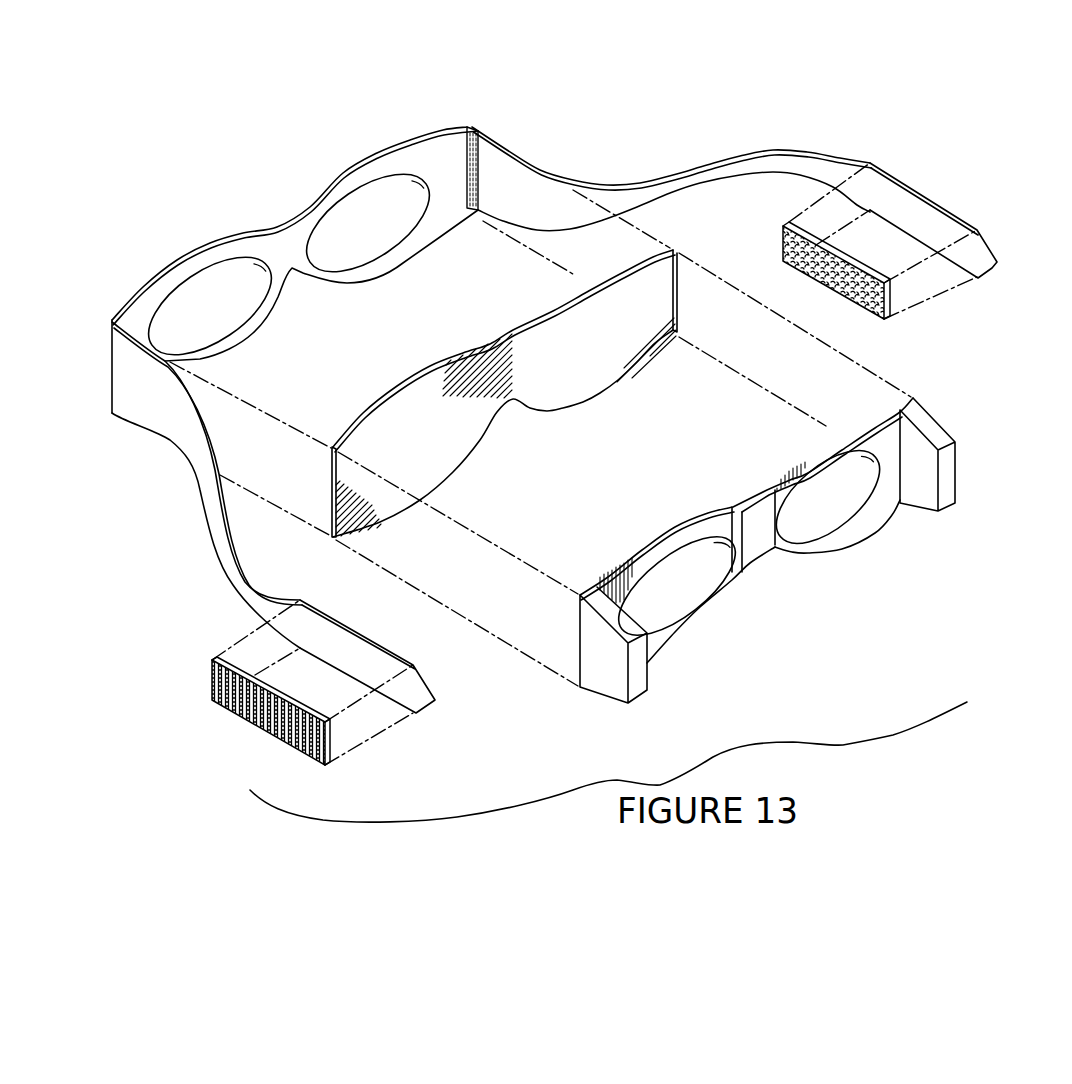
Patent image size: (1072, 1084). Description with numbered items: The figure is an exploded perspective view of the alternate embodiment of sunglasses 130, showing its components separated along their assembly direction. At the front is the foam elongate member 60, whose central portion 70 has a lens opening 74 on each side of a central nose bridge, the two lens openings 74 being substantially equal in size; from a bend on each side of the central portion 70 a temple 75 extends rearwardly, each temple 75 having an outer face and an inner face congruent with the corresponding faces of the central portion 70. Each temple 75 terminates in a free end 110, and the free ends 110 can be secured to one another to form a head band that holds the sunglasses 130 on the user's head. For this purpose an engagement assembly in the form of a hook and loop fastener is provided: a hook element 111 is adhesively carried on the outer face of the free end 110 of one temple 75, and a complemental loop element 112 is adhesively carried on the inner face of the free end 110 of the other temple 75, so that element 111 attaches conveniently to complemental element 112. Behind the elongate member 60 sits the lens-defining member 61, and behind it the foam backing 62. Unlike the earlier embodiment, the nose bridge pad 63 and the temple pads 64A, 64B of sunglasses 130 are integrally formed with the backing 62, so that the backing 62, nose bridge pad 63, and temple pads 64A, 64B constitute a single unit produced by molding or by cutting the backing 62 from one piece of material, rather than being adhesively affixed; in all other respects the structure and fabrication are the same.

The elongate member 60 is at (492, 370).
The central portion 70 is at (295, 235).
The lens opening 74 is at (222, 310).
The temple 75 is at (677, 172).
The free end 110 is at (936, 208).
The element of hook and loop fastener 111 is at (329, 745).
The complemental element of hook and loop fastener 112 is at (889, 317).
The lens-defining member 61 is at (586, 400).
The backing 62 is at (717, 613).
The nose bridge pad 63 is at (757, 504).
The temple pad 64A is at (640, 673).
The temple pad 64B is at (922, 495).
The sunglasses 130 is at (775, 550).